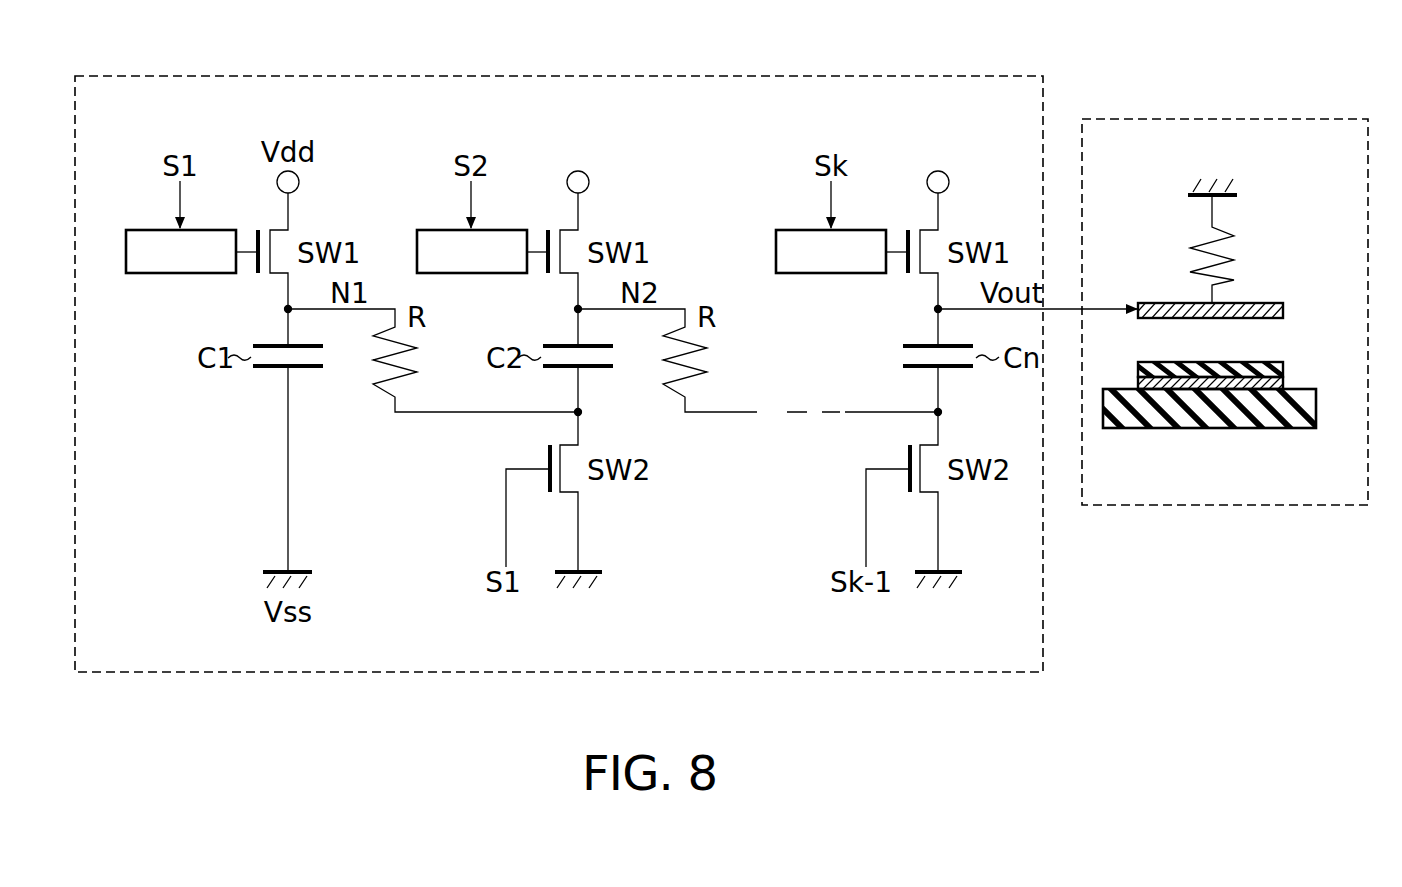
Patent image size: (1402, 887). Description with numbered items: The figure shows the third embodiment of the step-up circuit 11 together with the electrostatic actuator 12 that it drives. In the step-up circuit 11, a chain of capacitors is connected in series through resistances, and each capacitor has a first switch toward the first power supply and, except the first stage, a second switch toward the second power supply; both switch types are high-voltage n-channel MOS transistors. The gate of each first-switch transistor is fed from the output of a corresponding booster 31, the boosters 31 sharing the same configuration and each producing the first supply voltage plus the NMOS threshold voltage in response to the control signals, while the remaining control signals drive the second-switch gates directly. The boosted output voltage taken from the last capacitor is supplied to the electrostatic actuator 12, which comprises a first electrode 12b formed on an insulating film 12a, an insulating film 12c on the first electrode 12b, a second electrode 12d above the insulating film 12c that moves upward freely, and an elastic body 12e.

The step-up circuit 11 is at (738, 76).
The electrostatic actuator 12 is at (1266, 119).
The insulating film 12a is at (1277, 429).
The first electrode 12b is at (1283, 383).
The insulating film 12c is at (1283, 364).
The second electrode 12d is at (1283, 304).
The elastic body 12e is at (1237, 249).
The booster 31 is at (137, 229).